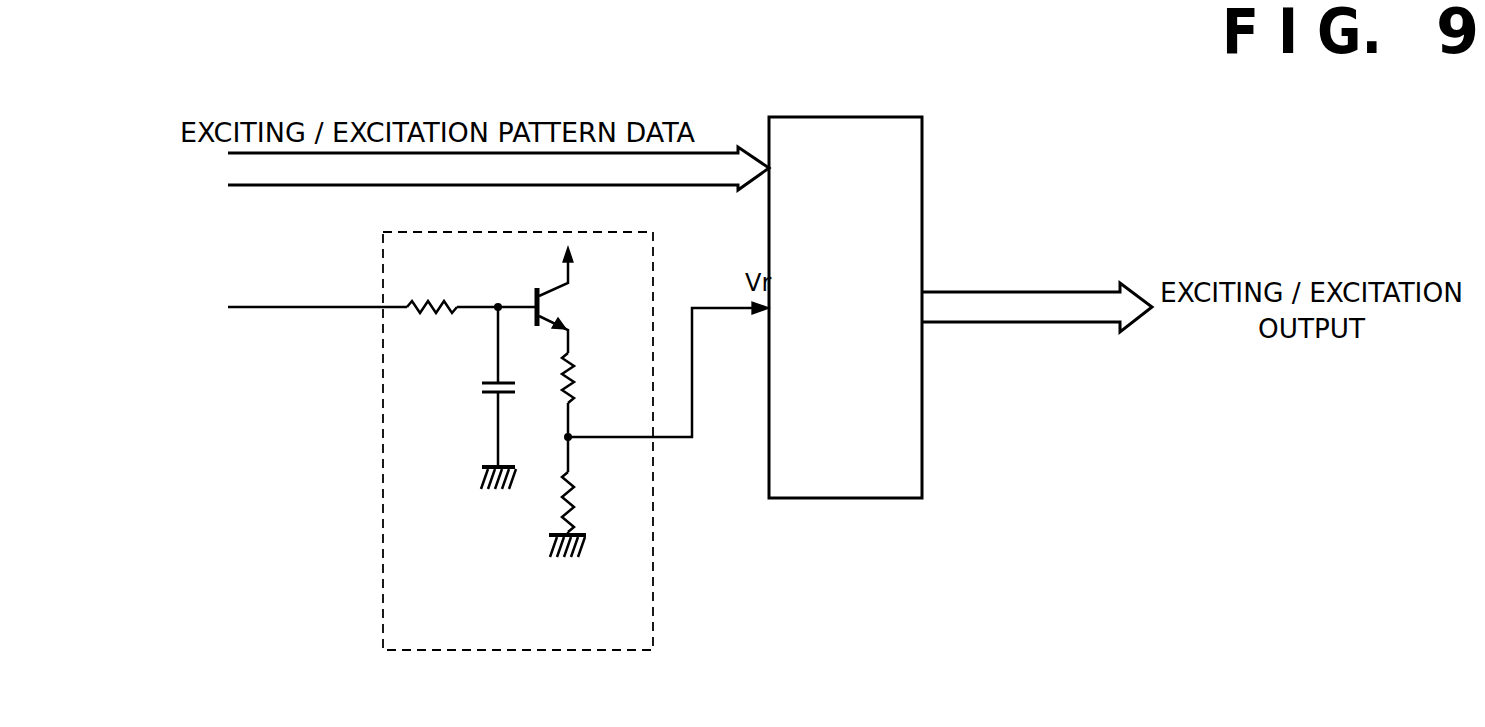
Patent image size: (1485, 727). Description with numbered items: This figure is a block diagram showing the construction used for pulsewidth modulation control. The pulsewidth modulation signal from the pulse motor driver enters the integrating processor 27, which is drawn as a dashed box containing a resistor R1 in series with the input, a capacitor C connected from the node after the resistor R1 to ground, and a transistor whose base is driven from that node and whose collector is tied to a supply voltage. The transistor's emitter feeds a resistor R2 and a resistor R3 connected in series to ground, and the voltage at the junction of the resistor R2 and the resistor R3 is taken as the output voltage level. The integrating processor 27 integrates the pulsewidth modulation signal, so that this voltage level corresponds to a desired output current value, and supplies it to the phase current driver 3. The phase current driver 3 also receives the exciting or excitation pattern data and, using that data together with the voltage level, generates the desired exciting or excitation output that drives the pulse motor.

The phase current driver 3 is at (922, 207).
The integrating processor 27 is at (383, 464).
The resistor R1 is at (432, 290).
The resistor R2 is at (592, 378).
The resistor R3 is at (592, 502).
The capacitor C is at (483, 398).